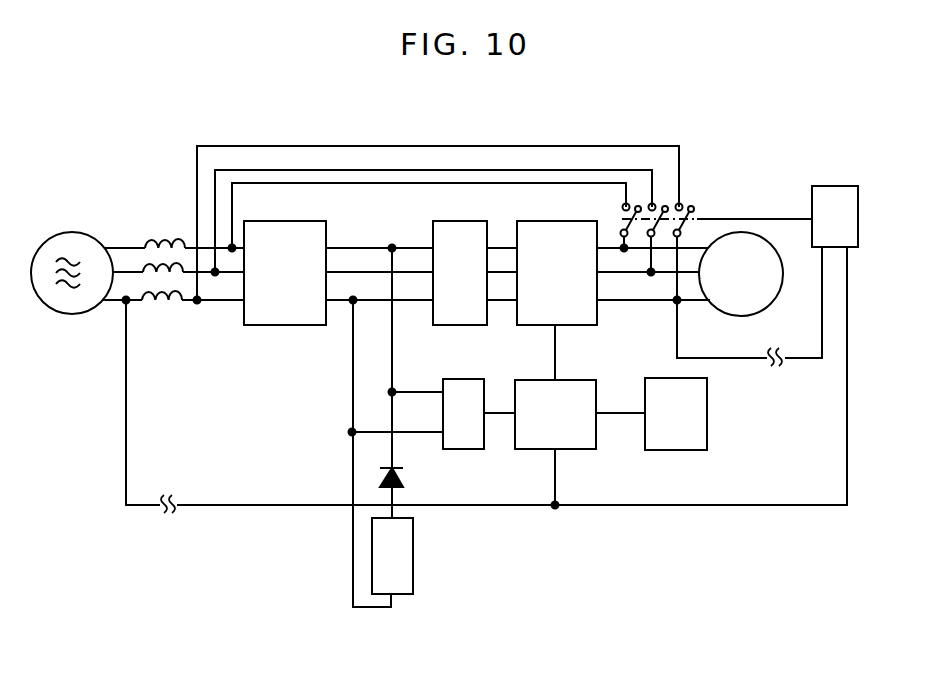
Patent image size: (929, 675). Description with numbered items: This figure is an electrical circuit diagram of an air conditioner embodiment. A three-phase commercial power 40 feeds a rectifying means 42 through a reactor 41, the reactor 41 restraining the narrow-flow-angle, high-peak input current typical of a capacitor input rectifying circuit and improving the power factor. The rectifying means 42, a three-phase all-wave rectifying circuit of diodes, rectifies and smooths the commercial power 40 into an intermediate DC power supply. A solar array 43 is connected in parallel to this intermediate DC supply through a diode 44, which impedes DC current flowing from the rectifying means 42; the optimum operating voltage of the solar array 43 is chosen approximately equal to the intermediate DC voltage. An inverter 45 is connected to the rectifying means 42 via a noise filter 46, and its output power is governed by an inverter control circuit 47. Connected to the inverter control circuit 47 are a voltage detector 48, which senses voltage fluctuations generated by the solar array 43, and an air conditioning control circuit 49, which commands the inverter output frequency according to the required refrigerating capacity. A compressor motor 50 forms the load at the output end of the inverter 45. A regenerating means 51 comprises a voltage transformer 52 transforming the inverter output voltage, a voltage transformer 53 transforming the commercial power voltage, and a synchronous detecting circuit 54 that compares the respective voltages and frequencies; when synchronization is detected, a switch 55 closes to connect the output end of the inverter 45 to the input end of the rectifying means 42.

The commercial power 40 is at (72, 312).
The reactor 41 is at (163, 238).
The rectifying means 42 is at (282, 323).
The solar array 43 is at (407, 562).
The diode 44 is at (380, 478).
The inverter 45 is at (557, 227).
The noise filter 46 is at (459, 227).
The inverter control circuit 47 is at (578, 444).
The voltage detector 48 is at (467, 444).
The air conditioning control circuit 49 is at (695, 445).
The compressor motor 50 is at (758, 243).
The regenerating means 51 is at (710, 180).
The voltage transformer 52 is at (773, 375).
The voltage transformer 53 is at (165, 517).
The synchronous detecting circuit 54 is at (847, 192).
The switch 55 is at (622, 218).